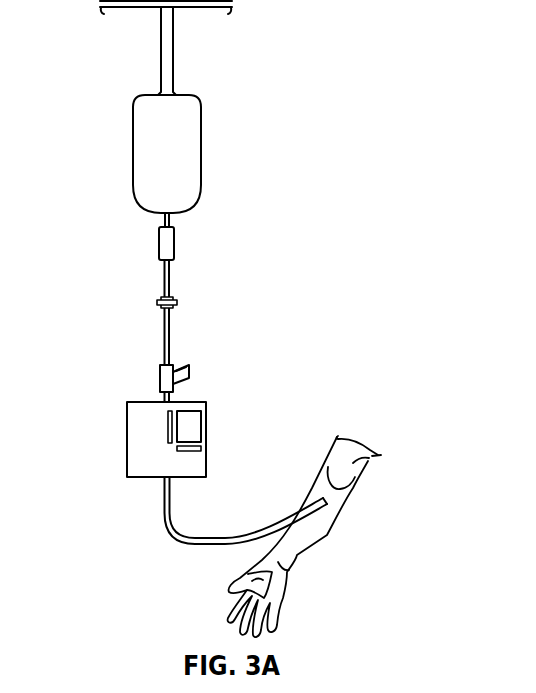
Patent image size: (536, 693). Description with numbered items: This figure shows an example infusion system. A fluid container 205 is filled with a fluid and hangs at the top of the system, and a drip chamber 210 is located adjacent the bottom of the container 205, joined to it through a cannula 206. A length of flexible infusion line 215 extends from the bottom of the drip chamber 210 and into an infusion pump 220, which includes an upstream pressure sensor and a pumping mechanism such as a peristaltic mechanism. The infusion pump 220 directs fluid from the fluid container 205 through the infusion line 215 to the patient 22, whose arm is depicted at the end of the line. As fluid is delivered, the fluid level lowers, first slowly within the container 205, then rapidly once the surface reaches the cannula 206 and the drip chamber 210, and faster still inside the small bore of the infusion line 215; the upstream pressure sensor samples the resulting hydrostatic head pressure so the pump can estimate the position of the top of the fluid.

The patient 22 is at (352, 468).
The fluid container 205 is at (201, 145).
The cannula 206 is at (169, 218).
The drip chamber 210 is at (159, 240).
The infusion line 215 is at (163, 283).
The infusion pump 220 is at (206, 435).